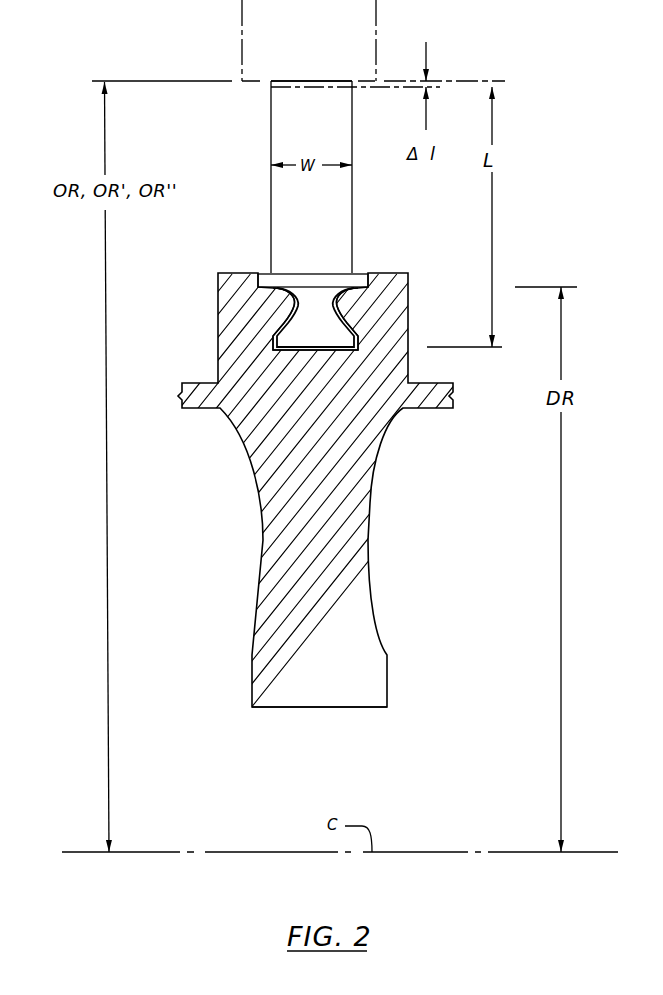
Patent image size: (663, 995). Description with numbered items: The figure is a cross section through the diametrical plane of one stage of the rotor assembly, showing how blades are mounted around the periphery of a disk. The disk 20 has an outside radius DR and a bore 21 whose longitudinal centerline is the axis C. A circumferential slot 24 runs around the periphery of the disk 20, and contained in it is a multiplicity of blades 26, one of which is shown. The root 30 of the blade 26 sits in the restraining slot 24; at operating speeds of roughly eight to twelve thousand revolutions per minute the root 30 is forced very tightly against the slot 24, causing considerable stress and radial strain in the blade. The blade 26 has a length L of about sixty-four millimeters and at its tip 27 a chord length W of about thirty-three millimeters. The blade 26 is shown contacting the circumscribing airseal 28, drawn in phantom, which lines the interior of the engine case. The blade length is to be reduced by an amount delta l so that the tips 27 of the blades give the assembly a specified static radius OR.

The disk 20 is at (370, 552).
The bore 21 is at (357, 707).
The circumferential slot 24 is at (280, 371).
The blade 26 is at (333, 225).
The tip 27 is at (314, 80).
The airseal 28 is at (248, 33).
The root 30 is at (313, 310).